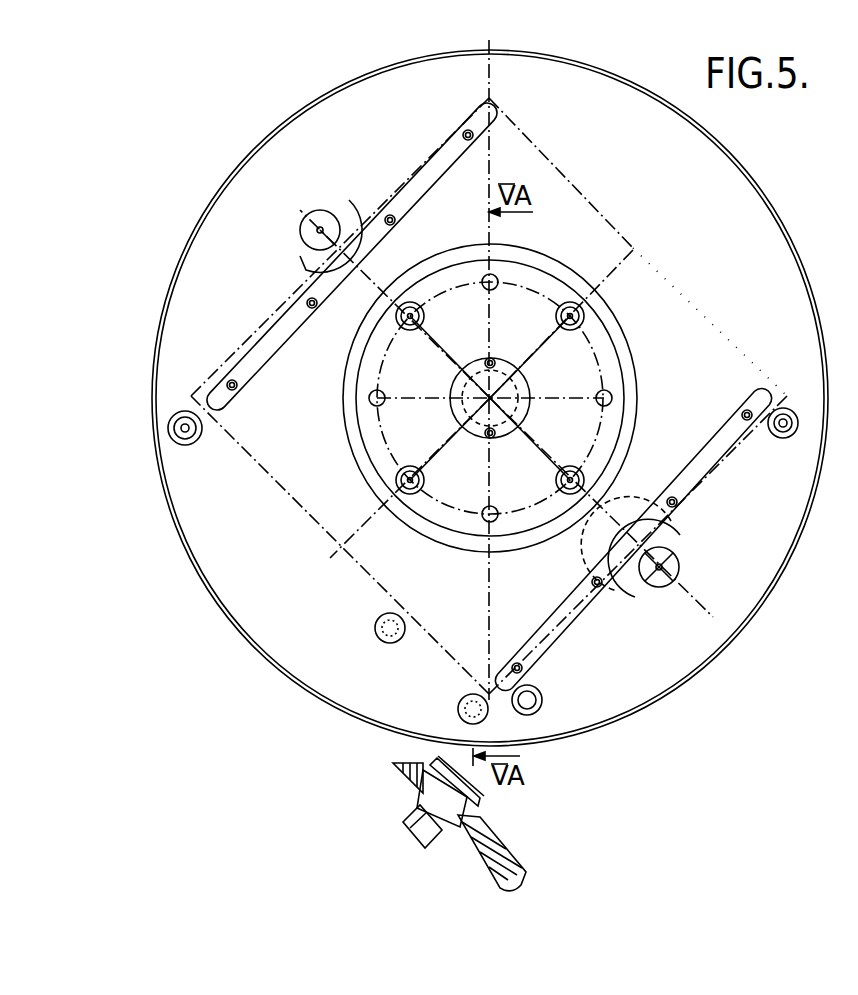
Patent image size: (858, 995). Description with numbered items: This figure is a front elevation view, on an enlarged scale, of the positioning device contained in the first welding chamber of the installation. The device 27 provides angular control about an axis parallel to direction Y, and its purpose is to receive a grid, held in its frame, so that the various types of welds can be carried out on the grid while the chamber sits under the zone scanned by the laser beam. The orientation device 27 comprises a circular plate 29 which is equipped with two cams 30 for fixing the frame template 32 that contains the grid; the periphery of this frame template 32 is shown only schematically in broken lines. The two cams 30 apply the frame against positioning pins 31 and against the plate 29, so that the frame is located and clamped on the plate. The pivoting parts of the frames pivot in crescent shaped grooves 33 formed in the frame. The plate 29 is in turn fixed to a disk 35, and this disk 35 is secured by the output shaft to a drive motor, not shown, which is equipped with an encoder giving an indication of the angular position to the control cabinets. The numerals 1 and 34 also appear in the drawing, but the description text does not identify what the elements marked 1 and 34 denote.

The apparatus 1 is at (327, 503).
The device for angular control 27 is at (231, 170).
The circular plate 29 is at (741, 200).
The cam 30 is at (342, 209).
The positioning pin 31 is at (457, 709).
The frame template 32 is at (270, 488).
The crescent shaped groove 33 is at (641, 500).
The roller bracket 34 is at (684, 535).
The disk 35 is at (510, 385).